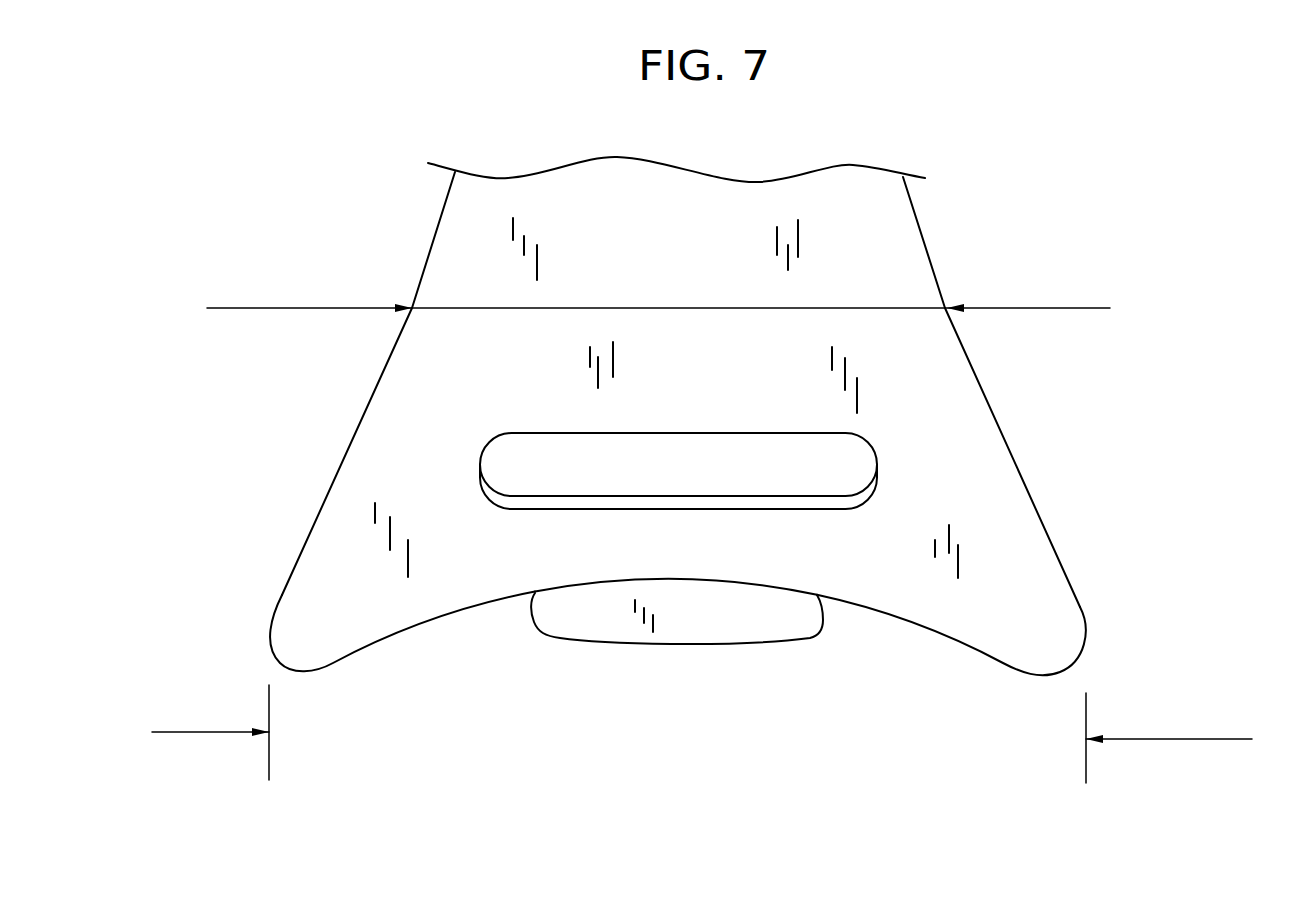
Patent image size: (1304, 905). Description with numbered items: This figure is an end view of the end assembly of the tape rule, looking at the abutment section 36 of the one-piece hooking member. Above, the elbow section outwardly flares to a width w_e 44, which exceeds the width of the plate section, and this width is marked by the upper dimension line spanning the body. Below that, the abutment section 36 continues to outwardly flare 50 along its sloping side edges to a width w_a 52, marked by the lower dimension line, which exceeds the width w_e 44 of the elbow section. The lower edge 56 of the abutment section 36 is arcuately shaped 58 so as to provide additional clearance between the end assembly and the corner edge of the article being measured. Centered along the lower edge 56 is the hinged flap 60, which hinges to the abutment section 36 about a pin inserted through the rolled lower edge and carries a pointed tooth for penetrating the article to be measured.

The abutment section 36 is at (998, 418).
The width w_e 44 is at (1020, 308).
The outward flare 50 is at (1045, 522).
The width w_a 52 is at (1165, 740).
The lower edge 56 is at (943, 637).
The arcuate shape 58 is at (425, 625).
The hinged flap 60 is at (685, 647).